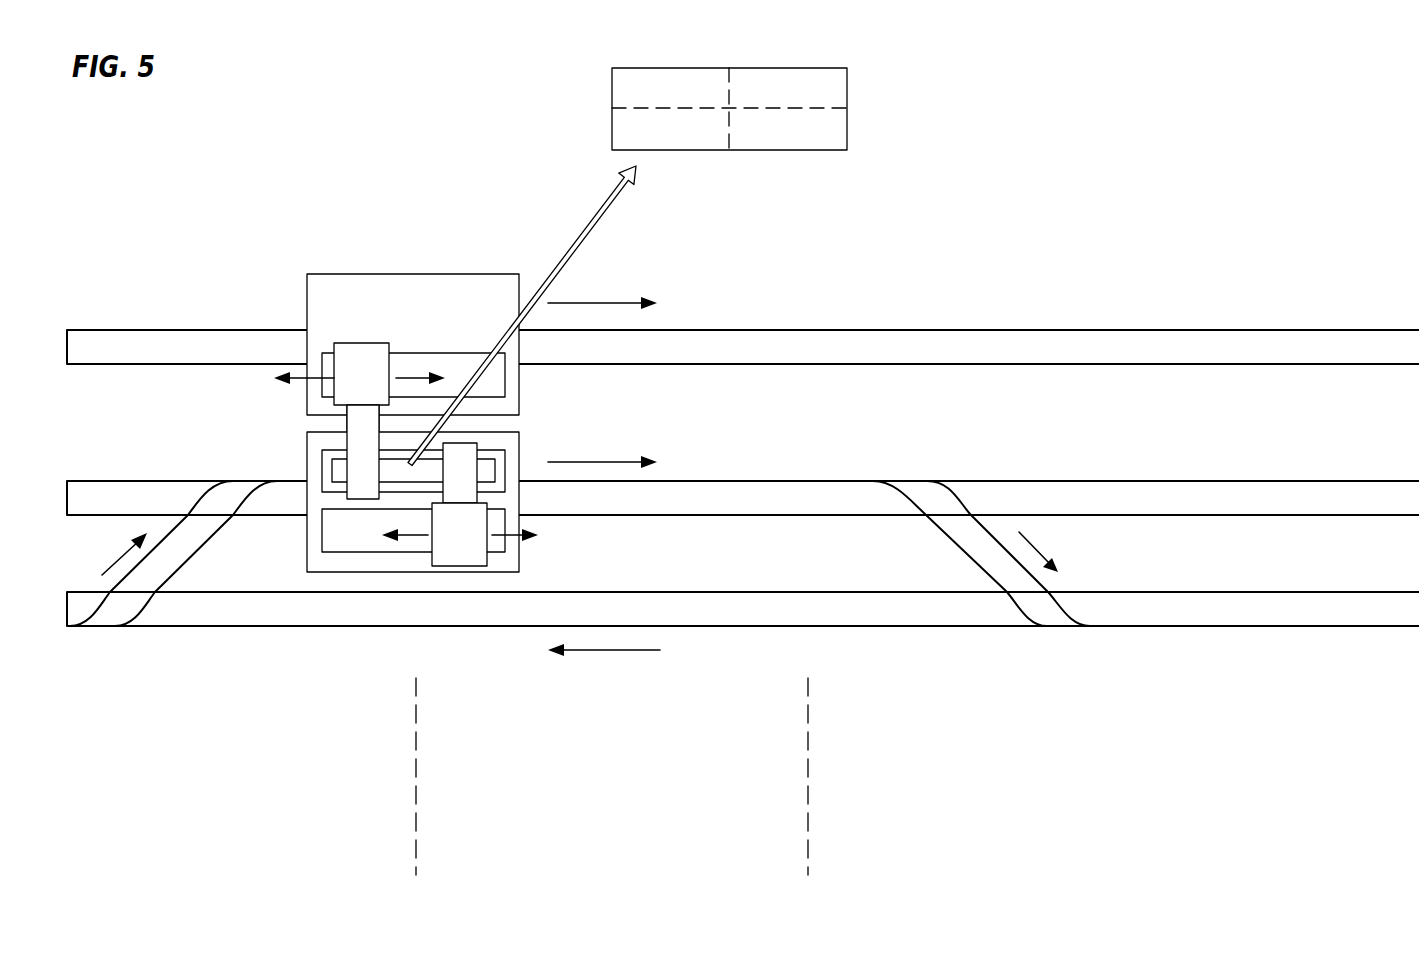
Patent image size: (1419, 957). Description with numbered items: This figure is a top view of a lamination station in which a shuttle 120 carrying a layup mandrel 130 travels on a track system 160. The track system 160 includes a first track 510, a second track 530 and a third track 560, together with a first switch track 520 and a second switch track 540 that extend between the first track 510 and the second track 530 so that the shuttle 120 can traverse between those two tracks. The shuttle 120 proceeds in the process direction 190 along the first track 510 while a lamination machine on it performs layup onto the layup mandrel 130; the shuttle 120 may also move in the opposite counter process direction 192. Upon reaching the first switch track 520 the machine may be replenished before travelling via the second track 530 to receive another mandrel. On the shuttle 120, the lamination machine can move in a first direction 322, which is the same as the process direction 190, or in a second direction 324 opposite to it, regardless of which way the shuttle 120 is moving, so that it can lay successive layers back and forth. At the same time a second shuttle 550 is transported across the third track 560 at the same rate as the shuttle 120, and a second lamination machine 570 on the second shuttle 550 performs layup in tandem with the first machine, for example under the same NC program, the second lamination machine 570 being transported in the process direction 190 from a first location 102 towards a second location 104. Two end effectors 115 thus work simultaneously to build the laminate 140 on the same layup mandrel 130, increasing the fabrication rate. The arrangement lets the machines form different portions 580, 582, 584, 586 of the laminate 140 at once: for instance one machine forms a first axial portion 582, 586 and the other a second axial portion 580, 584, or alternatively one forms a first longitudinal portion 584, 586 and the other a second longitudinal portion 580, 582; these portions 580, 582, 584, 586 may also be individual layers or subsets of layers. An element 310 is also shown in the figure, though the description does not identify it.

The first location 102 is at (416, 791).
The second location 104 is at (808, 791).
The end effector 115 is at (463, 452).
The shuttle 120 is at (551, 419).
The layup mandrel 130 is at (322, 468).
The laminate 140 is at (635, 269).
The track system 160 is at (1288, 248).
The process direction 190 is at (617, 302).
The counter process direction 192 is at (593, 652).
The actuator 310 is at (458, 566).
The first direction 322 is at (512, 538).
The second direction 324 is at (410, 538).
The first track 510 is at (128, 480).
The first switch track 520 is at (948, 538).
The second track 530 is at (292, 628).
The second switch track 540 is at (212, 537).
The second shuttle 550 is at (484, 256).
The third track 560 is at (177, 330).
The second lamination machine 570 is at (367, 343).
The portion of the laminate 580 is at (670, 88).
The portion of the laminate 582 is at (788, 88).
The portion of the laminate 584 is at (670, 129).
The portion of the laminate 586 is at (809, 150).